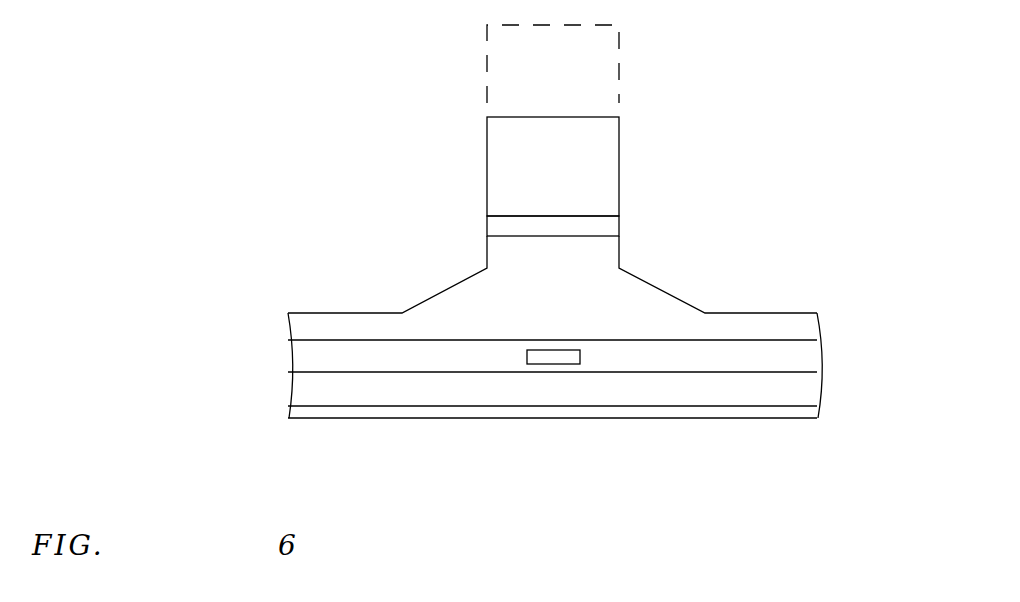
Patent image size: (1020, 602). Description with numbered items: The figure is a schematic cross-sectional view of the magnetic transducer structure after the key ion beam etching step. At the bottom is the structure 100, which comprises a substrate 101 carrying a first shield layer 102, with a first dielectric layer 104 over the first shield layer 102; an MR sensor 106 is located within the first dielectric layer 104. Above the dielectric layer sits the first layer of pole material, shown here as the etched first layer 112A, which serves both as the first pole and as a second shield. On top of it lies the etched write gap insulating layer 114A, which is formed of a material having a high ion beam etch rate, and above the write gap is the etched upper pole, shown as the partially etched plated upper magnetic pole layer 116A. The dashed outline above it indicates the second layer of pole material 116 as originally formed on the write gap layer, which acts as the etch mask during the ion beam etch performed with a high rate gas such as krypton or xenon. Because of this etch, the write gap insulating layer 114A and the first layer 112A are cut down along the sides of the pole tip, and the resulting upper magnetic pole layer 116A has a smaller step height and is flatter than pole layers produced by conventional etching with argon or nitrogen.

The second layer of pole material 116 is at (619, 64).
The partially etched plated upper magnetic pole layer 116A is at (598, 155).
The etched write gap insulating layer 114A is at (598, 228).
The etched first layer of pole material 112A is at (307, 318).
The first dielectric layer 104 is at (307, 354).
The first shield layer 102 is at (307, 386).
The substrate 101 is at (307, 412).
The structure 100 is at (155, 342).
The MR sensor 106 is at (560, 364).